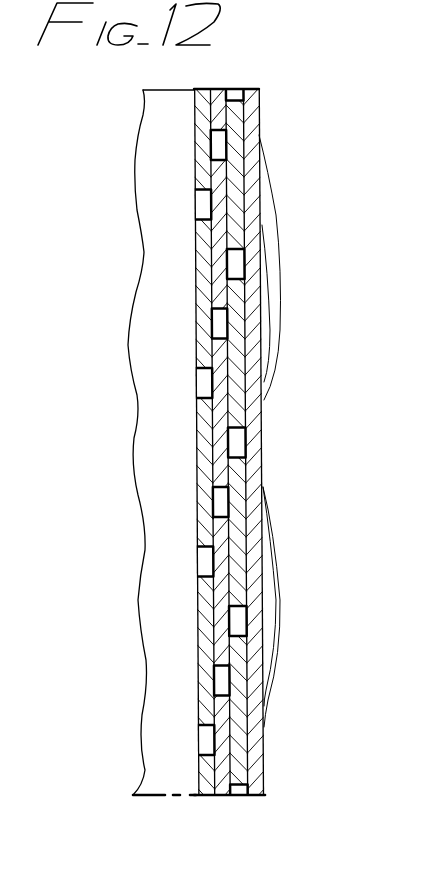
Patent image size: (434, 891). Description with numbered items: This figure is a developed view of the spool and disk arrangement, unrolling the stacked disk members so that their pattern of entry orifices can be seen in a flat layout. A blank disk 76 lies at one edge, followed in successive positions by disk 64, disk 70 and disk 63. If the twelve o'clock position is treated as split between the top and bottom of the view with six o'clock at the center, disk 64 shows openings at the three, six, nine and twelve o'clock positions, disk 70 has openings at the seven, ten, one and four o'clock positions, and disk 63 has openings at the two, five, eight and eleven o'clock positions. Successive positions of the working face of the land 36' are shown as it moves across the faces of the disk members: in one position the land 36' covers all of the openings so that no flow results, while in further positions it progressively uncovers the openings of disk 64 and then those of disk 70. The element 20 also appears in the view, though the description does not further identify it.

The wall 20 is at (167, 721).
The peeled layers 36' is at (304, 434).
The anchor blocks 63 is at (205, 797).
The bottom edge 64 is at (244, 797).
The laminated strip 70 is at (218, 797).
The top edge 76 is at (248, 88).